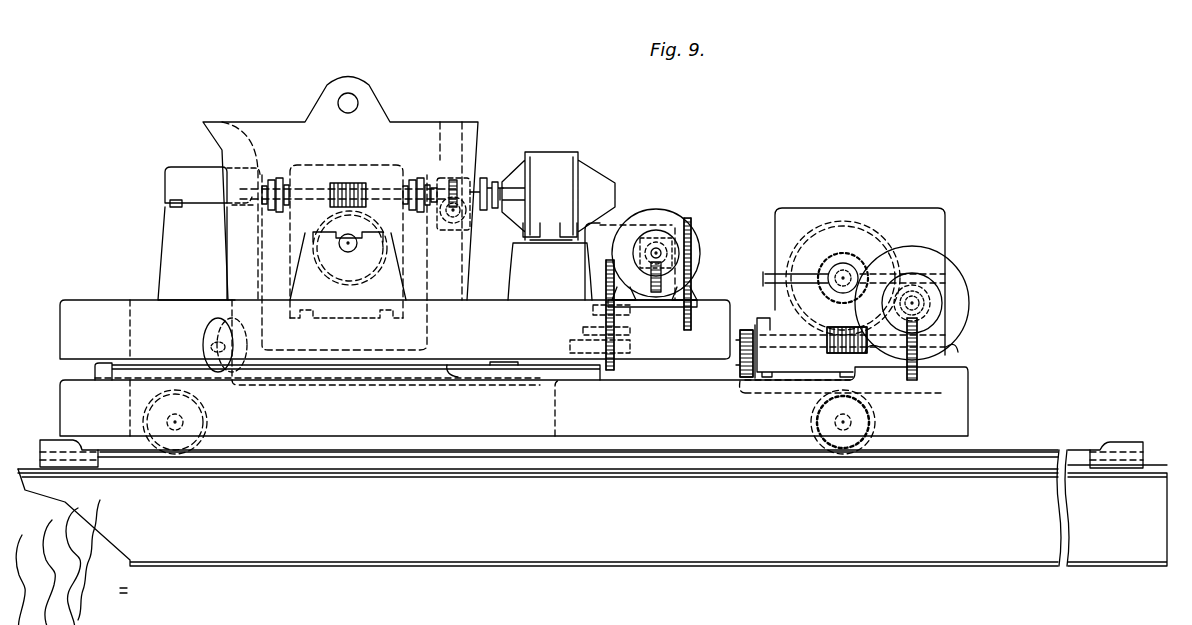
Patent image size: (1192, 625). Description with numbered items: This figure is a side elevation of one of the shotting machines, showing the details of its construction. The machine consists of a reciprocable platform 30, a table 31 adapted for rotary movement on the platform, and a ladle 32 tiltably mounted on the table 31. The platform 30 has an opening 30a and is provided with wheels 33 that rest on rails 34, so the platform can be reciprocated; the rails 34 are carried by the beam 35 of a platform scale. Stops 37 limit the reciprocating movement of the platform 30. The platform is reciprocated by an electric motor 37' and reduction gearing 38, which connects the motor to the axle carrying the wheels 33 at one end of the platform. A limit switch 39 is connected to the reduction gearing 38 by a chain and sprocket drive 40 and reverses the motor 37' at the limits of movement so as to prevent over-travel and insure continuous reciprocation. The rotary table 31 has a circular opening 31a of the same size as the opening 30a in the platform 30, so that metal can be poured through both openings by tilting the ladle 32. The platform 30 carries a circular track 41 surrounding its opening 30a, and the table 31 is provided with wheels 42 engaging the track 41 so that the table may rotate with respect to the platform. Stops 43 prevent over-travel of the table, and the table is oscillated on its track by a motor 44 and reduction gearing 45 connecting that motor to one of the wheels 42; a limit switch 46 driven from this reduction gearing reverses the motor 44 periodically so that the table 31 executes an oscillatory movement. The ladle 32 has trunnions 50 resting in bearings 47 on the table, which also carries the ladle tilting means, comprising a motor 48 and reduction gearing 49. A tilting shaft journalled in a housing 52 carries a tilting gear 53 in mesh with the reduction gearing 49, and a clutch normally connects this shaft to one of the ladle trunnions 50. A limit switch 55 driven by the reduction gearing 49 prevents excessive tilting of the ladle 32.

The reciprocable platform 30 is at (966, 414).
The opening in platform 30a is at (548, 404).
The rotary table 31 is at (60, 322).
The circular opening in table 31a is at (132, 318).
The ladle 32 is at (450, 122).
The wheels 33 is at (208, 420).
The rails 34 is at (1007, 450).
The beam 35 is at (638, 556).
The stops 37 is at (580, 438).
The electric motor 37' is at (931, 313).
The reduction gearing 38 is at (864, 212).
The limit switch 39 is at (851, 346).
The chain and sprocket drive 40 is at (744, 332).
The circular track 41 is at (95, 366).
The wheels 42 is at (205, 325).
The stops 43 is at (107, 363).
The motor 44 is at (692, 257).
The reduction gearing 45 is at (662, 223).
The limit switch 46 is at (612, 228).
The bearings 47 is at (330, 262).
The motor 48 is at (544, 160).
The reduction gearing 49 is at (462, 180).
The trunnions 50 is at (347, 250).
The housing 52 is at (315, 158).
The tilting gear 53 is at (400, 195).
The limit switch 55 is at (188, 170).